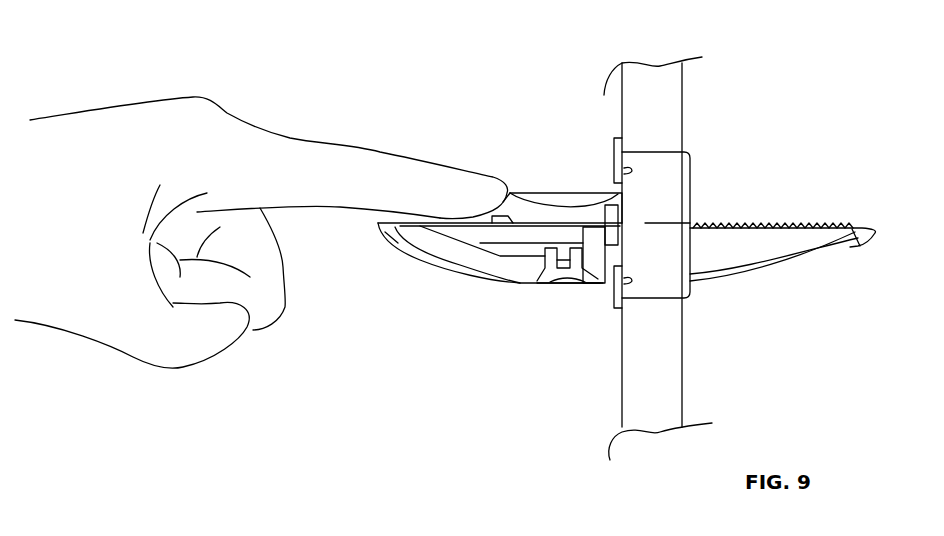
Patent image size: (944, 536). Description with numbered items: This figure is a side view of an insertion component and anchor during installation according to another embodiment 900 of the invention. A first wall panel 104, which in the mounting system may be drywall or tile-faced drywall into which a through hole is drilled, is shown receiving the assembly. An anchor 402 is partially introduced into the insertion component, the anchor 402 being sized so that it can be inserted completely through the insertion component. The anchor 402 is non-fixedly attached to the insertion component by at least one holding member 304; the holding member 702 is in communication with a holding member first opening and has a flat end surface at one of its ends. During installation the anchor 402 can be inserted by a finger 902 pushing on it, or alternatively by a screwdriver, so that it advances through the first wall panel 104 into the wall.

The insertion component and anchor during installation 900 is at (786, 46).
The finger 902 is at (334, 112).
The first wall panel 104 is at (572, 93).
The holding member 702 is at (597, 255).
The holding member 304 is at (575, 286).
The anchor 402 is at (724, 297).